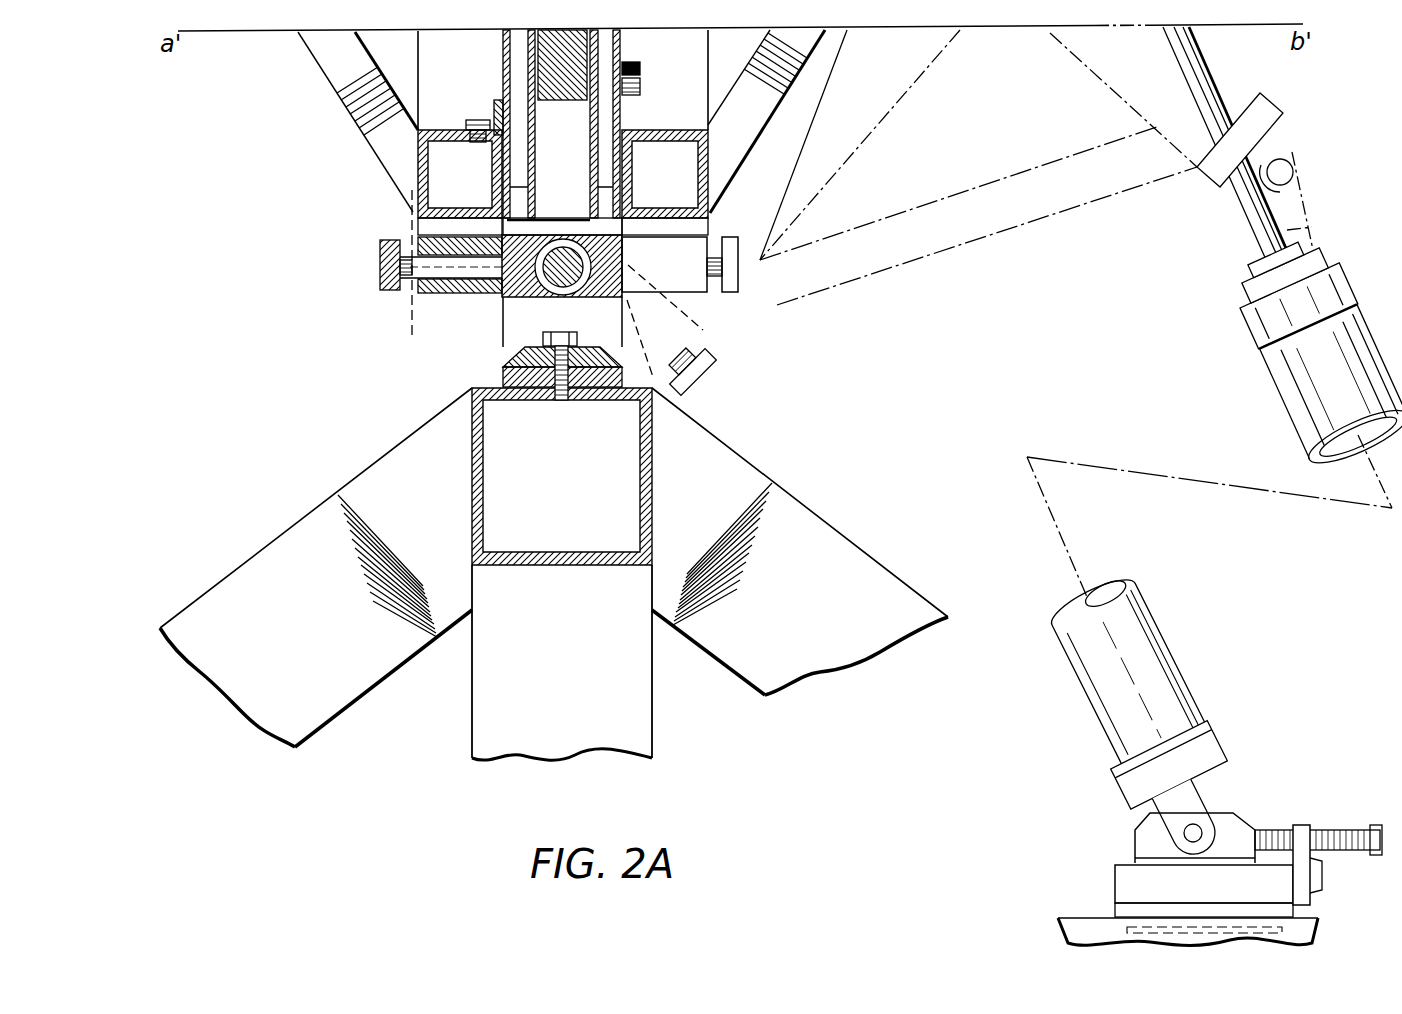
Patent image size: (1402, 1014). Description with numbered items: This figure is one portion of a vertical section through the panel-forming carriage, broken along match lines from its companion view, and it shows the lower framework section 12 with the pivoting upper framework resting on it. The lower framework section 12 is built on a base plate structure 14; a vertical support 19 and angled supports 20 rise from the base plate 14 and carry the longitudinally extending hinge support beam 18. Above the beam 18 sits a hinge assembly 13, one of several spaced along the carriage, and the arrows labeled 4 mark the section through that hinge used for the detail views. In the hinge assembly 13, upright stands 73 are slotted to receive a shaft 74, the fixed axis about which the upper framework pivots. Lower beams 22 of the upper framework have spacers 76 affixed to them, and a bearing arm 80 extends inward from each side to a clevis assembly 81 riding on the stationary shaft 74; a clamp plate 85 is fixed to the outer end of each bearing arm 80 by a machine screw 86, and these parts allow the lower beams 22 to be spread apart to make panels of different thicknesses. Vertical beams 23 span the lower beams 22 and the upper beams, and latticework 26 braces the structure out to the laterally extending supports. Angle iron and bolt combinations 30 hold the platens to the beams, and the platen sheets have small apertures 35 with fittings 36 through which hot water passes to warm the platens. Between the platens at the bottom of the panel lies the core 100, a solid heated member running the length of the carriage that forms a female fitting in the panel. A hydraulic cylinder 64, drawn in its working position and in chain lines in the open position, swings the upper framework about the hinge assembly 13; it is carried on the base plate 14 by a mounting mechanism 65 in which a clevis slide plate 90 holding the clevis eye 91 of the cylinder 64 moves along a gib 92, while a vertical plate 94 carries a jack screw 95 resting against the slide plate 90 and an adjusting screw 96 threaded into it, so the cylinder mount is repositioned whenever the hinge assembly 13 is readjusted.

The section line 4- 4 is at (412, 197).
The lower framework section 12 is at (813, 503).
The hinge assembly 13 is at (500, 315).
The base plate structure 14 is at (1083, 923).
The hinge support beam 18 is at (653, 472).
The vertical support 19 is at (582, 664).
The angled supports 20 is at (340, 628).
The lower beams 22 is at (417, 163).
The vertical beams 23 is at (473, 62).
The latticework 26 is at (347, 82).
The angle iron and bolt combination 30 is at (497, 113).
The small apertures 35 is at (643, 88).
The fittings 36 is at (635, 98).
The hydraulic cylinder 64 is at (1308, 383).
The mounting mechanism 65 is at (1256, 819).
The upright stands 73 is at (492, 290).
The shaft 74 is at (580, 290).
The spacers 76 is at (432, 230).
The bearing arm 80 is at (451, 267).
The clevis assembly 81 is at (527, 283).
The clamp plate 85 is at (397, 292).
The machine screw 86 is at (382, 263).
The clevis slide plate 90 is at (1147, 838).
The clevis eye 91 is at (1192, 801).
The gib 92 is at (1128, 877).
The vertical plate 94 is at (1307, 893).
The jack screw 95 is at (1330, 829).
The adjusting screw 96 is at (1323, 877).
The core 100 is at (551, 92).